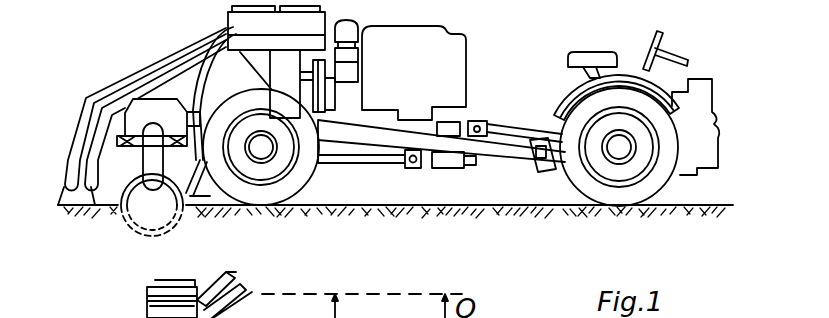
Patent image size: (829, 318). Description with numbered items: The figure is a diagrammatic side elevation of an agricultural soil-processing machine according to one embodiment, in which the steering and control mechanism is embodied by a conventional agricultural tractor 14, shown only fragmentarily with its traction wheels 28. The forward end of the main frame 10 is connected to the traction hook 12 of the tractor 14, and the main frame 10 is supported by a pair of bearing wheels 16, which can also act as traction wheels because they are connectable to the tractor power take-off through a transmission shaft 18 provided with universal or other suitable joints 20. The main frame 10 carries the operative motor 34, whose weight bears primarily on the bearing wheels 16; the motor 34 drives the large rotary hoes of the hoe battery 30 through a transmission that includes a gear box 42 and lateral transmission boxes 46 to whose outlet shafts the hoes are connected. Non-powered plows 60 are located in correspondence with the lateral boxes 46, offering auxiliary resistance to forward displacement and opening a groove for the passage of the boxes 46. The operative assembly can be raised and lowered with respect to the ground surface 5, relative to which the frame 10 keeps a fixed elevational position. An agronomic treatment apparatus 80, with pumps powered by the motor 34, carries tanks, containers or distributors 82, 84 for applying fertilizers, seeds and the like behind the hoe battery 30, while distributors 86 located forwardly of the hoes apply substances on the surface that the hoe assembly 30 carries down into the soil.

The ground surface 5 is at (415, 206).
The main frame 10 is at (396, 140).
The traction hook 12 is at (532, 166).
The agricultural tractor 14 is at (696, 70).
The bearing wheels 16 is at (296, 180).
The transmission shaft 18 is at (512, 126).
The universal joints 20 is at (480, 120).
The traction wheels 28 is at (653, 190).
The hoe battery 30 is at (188, 206).
The operative motor 34 is at (452, 60).
The gear box 42 is at (141, 98).
The lateral transmission boxes 46 is at (148, 292).
The non-powered plows 60 is at (247, 290).
The agronomic treatment apparatus 80 is at (220, 16).
The tanks, containers, distributors 82 is at (90, 210).
The tanks, containers, distributors 84 is at (58, 212).
The distributors 86 is at (213, 194).